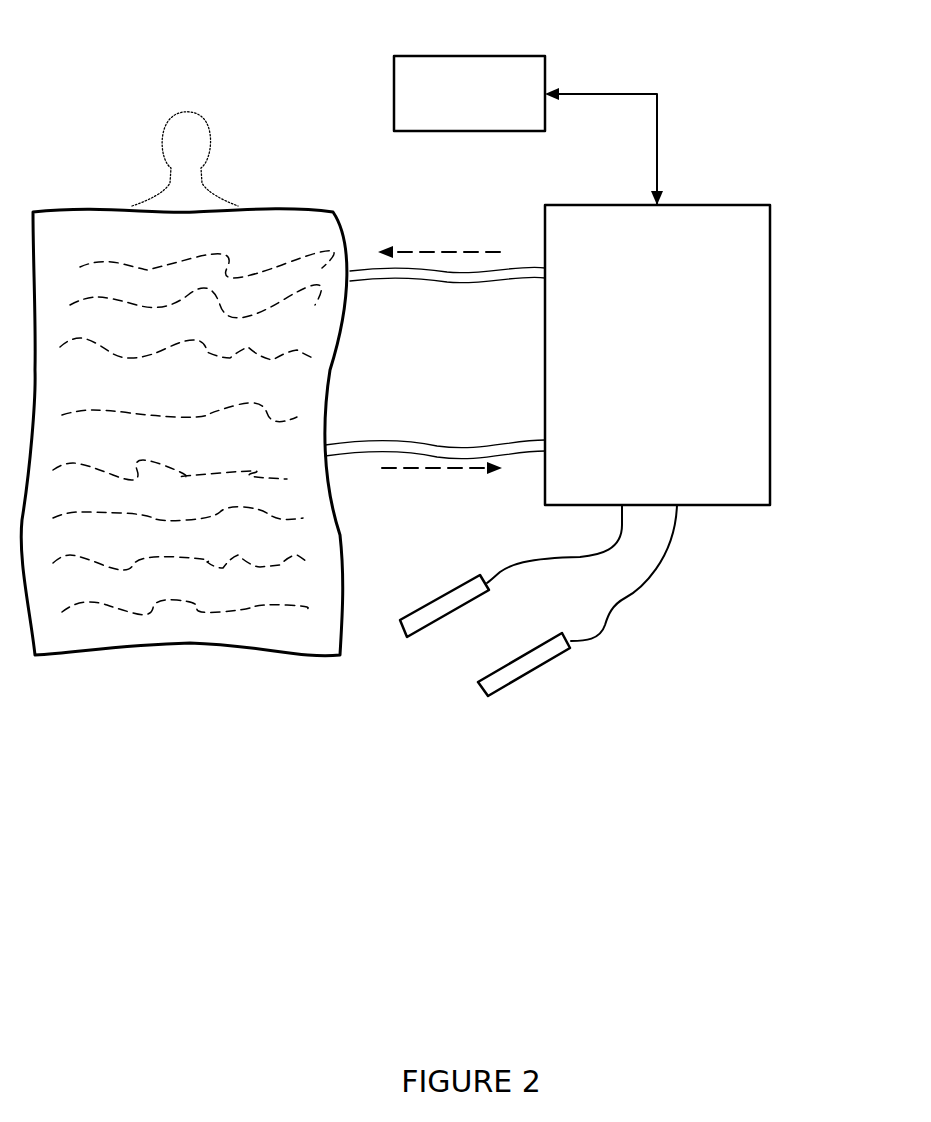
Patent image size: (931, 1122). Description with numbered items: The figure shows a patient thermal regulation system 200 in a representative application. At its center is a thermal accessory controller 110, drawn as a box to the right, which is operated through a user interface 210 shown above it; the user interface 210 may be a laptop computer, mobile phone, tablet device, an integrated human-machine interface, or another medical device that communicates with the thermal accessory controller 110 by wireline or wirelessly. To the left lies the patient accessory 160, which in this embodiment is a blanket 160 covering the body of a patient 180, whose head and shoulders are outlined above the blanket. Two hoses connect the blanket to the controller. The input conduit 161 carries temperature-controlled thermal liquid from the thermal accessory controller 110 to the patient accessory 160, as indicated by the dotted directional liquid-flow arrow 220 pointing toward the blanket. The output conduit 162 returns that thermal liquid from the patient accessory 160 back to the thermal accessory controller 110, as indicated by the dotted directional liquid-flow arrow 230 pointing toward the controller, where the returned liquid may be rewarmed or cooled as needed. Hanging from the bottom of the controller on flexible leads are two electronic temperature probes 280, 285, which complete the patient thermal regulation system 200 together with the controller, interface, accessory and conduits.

The thermal accessory controller 110 is at (695, 205).
The patient accessory 160 is at (92, 656).
The input conduit 161 is at (433, 281).
The output conduit 162 is at (395, 440).
The patient 180 is at (188, 110).
The patient thermal regulation system 200 is at (758, 816).
The user interface 210 is at (507, 56).
The directional liquid-flow arrow 220 is at (409, 253).
The directional liquid-flow arrow 230 is at (410, 468).
The electronic temperature probe 280 is at (430, 625).
The electronic temperature probe 285 is at (515, 685).